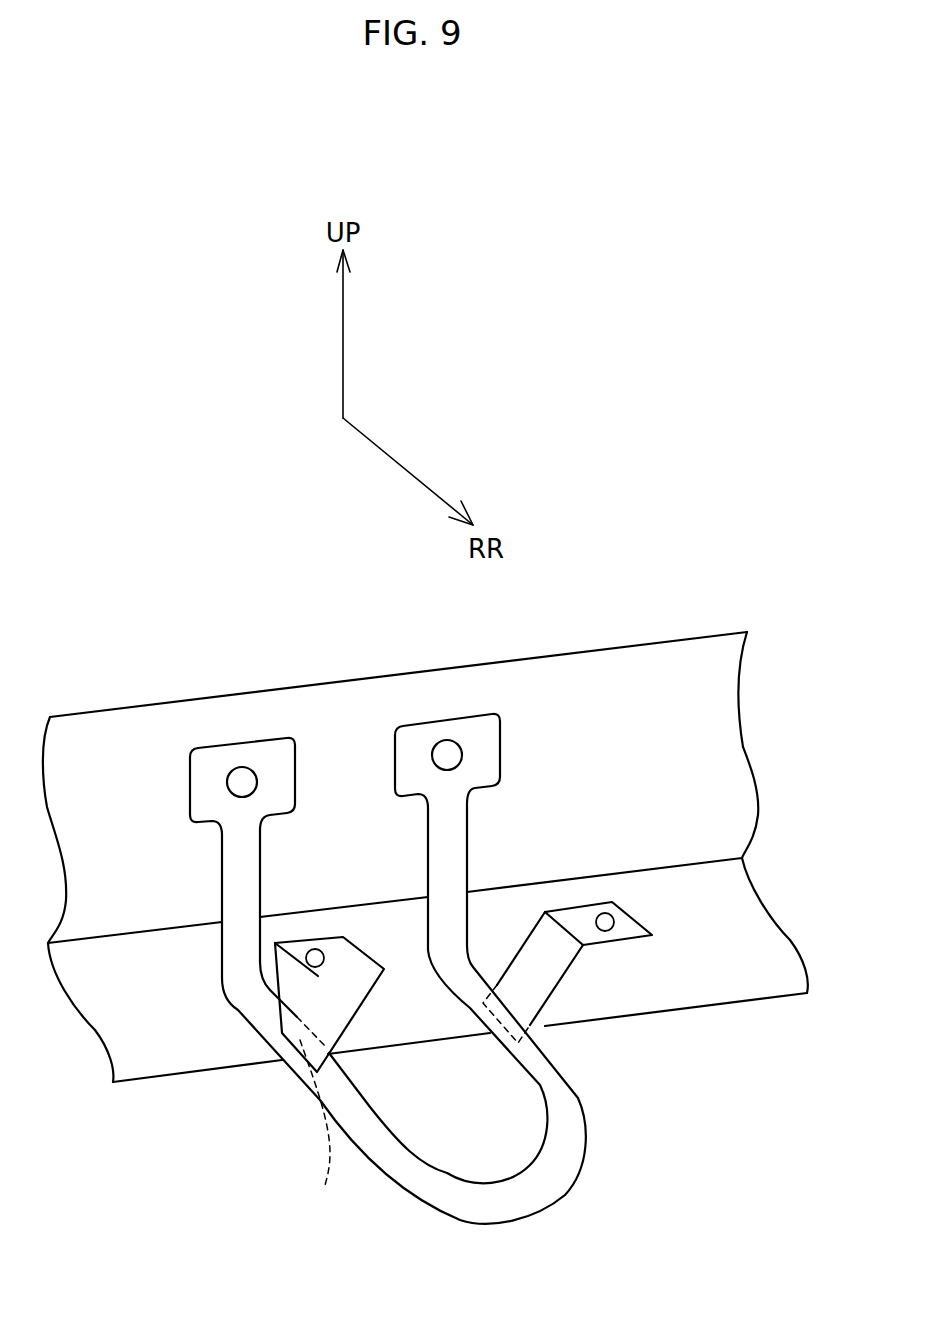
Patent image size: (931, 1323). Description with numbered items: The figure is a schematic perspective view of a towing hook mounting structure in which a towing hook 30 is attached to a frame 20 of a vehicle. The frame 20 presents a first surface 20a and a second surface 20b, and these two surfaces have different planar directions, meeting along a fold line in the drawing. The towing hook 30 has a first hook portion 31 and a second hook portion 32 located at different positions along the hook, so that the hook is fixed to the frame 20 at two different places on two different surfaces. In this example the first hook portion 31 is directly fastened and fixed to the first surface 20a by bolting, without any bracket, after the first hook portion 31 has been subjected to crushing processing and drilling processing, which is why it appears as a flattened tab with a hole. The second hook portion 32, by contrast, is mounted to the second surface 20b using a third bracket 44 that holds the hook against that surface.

The frame 20 is at (439, 811).
The first surface 20a is at (707, 728).
The second surface 20b is at (738, 935).
The towing hook 30 is at (442, 964).
The first hook portion 31 is at (268, 777).
The second hook portion 32 is at (514, 1023).
The third bracket 44 is at (348, 998).